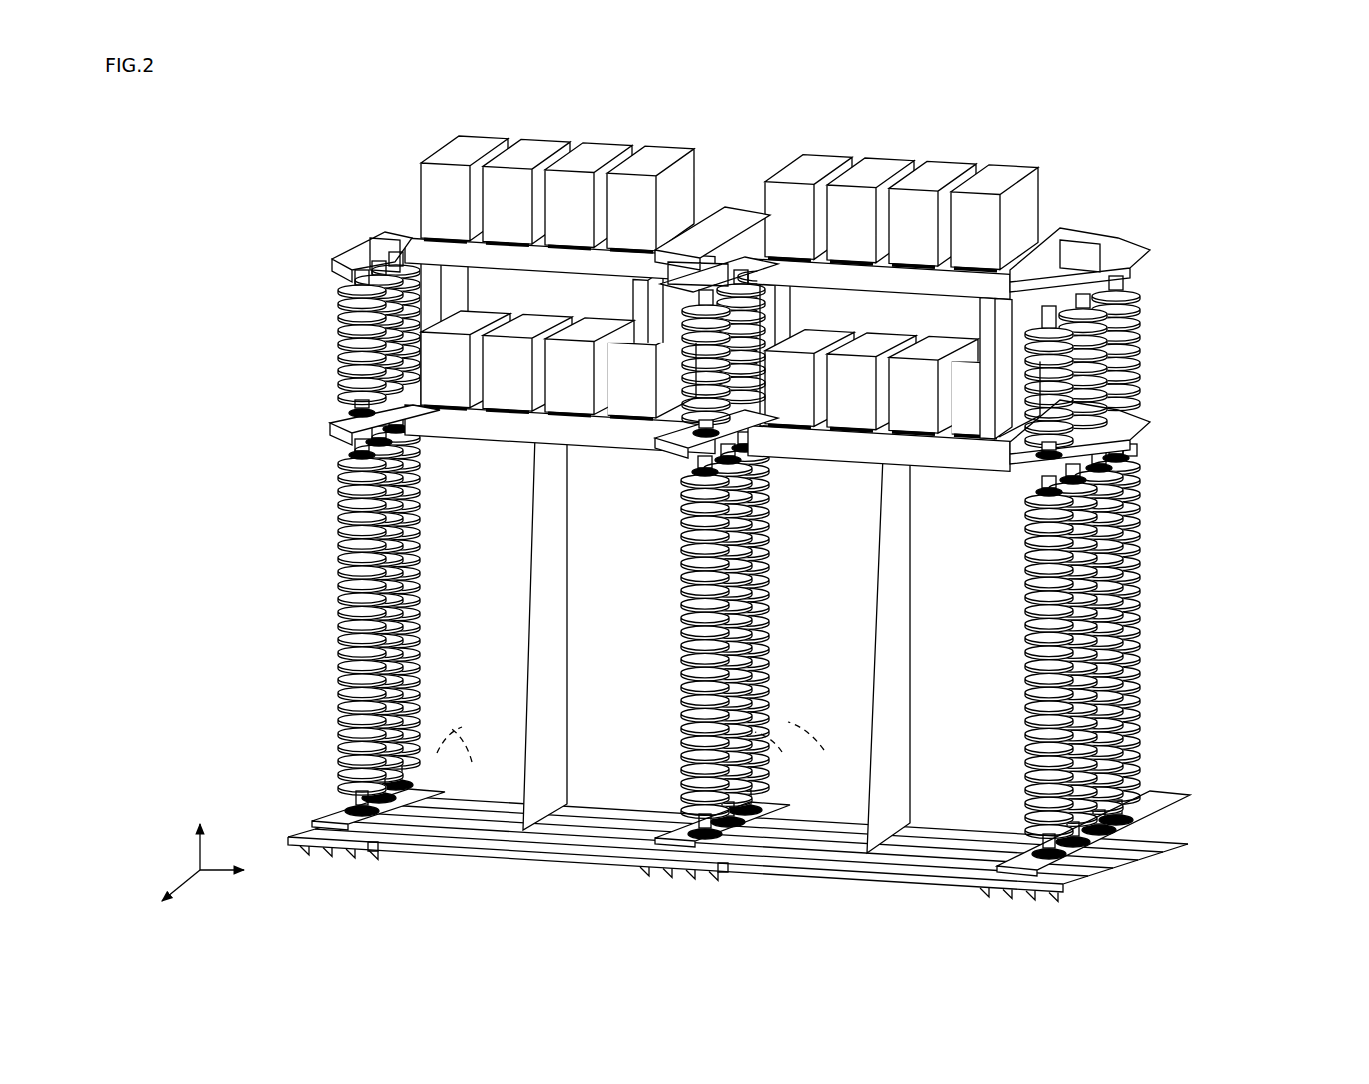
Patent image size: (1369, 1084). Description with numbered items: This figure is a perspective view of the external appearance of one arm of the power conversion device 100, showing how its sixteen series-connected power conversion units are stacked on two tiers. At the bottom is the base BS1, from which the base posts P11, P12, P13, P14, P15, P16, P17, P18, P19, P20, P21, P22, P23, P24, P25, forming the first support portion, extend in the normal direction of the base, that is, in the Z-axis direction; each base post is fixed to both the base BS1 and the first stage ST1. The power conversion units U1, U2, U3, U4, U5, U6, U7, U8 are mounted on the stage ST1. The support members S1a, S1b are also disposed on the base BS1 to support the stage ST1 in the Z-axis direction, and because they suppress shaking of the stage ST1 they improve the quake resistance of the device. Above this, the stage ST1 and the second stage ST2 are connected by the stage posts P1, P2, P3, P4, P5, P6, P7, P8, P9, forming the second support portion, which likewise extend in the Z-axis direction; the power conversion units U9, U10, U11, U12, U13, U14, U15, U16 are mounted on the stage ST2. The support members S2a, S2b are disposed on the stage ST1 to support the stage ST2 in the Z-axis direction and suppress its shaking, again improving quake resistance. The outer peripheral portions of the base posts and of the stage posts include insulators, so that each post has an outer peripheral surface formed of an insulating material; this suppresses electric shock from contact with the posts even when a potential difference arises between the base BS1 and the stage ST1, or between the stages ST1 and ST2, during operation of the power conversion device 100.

The power conversion device 100 is at (283, 78).
The power conversion unit U1 is at (447, 392).
The power conversion unit U2 is at (507, 394).
The power conversion unit U3 is at (567, 396).
The power conversion unit U4 is at (628, 399).
The power conversion unit U5 is at (795, 413).
The power conversion unit U6 is at (847, 414).
The power conversion unit U7 is at (913, 417).
The power conversion unit U8 is at (973, 421).
The power conversion unit U9 is at (475, 150).
The power conversion unit U10 is at (537, 152).
The power conversion unit U11 is at (597, 155).
The power conversion unit U12 is at (658, 158).
The power conversion unit U13 is at (822, 170).
The power conversion unit U14 is at (882, 174).
The power conversion unit U15 is at (942, 177).
The power conversion unit U16 is at (1002, 181).
The stage post P1 is at (348, 394).
The stage post P2 is at (395, 360).
The stage post P3 is at (403, 313).
The stage post P4 is at (708, 316).
The stage post P5 is at (737, 292).
The stage post P6 is at (772, 296).
The stage post P7 is at (1063, 333).
The stage post P8 is at (1100, 312).
The stage post P9 is at (1130, 291).
The base post P11 is at (352, 770).
The base post P12 is at (382, 745).
The base post P13 is at (400, 712).
The base post P14 is at (437, 753).
The base post P15 is at (472, 762).
The base post P16 is at (688, 795).
The base post P17 is at (733, 788).
The base post P18 is at (748, 783).
The base post P19 is at (782, 752).
The base post P20 is at (824, 750).
The base post P21 is at (1062, 826).
The base post P22 is at (1080, 822).
The base post P23 is at (1100, 812).
The base post P24 is at (1118, 800).
The base post P25 is at (1128, 770).
The support member S1a is at (547, 792).
The support member S1b is at (883, 812).
The support member S2a is at (384, 283).
The support member S2b is at (993, 326).
The stage ST1 is at (1124, 433).
The stage ST2 is at (1130, 266).
The base BS1 is at (985, 862).